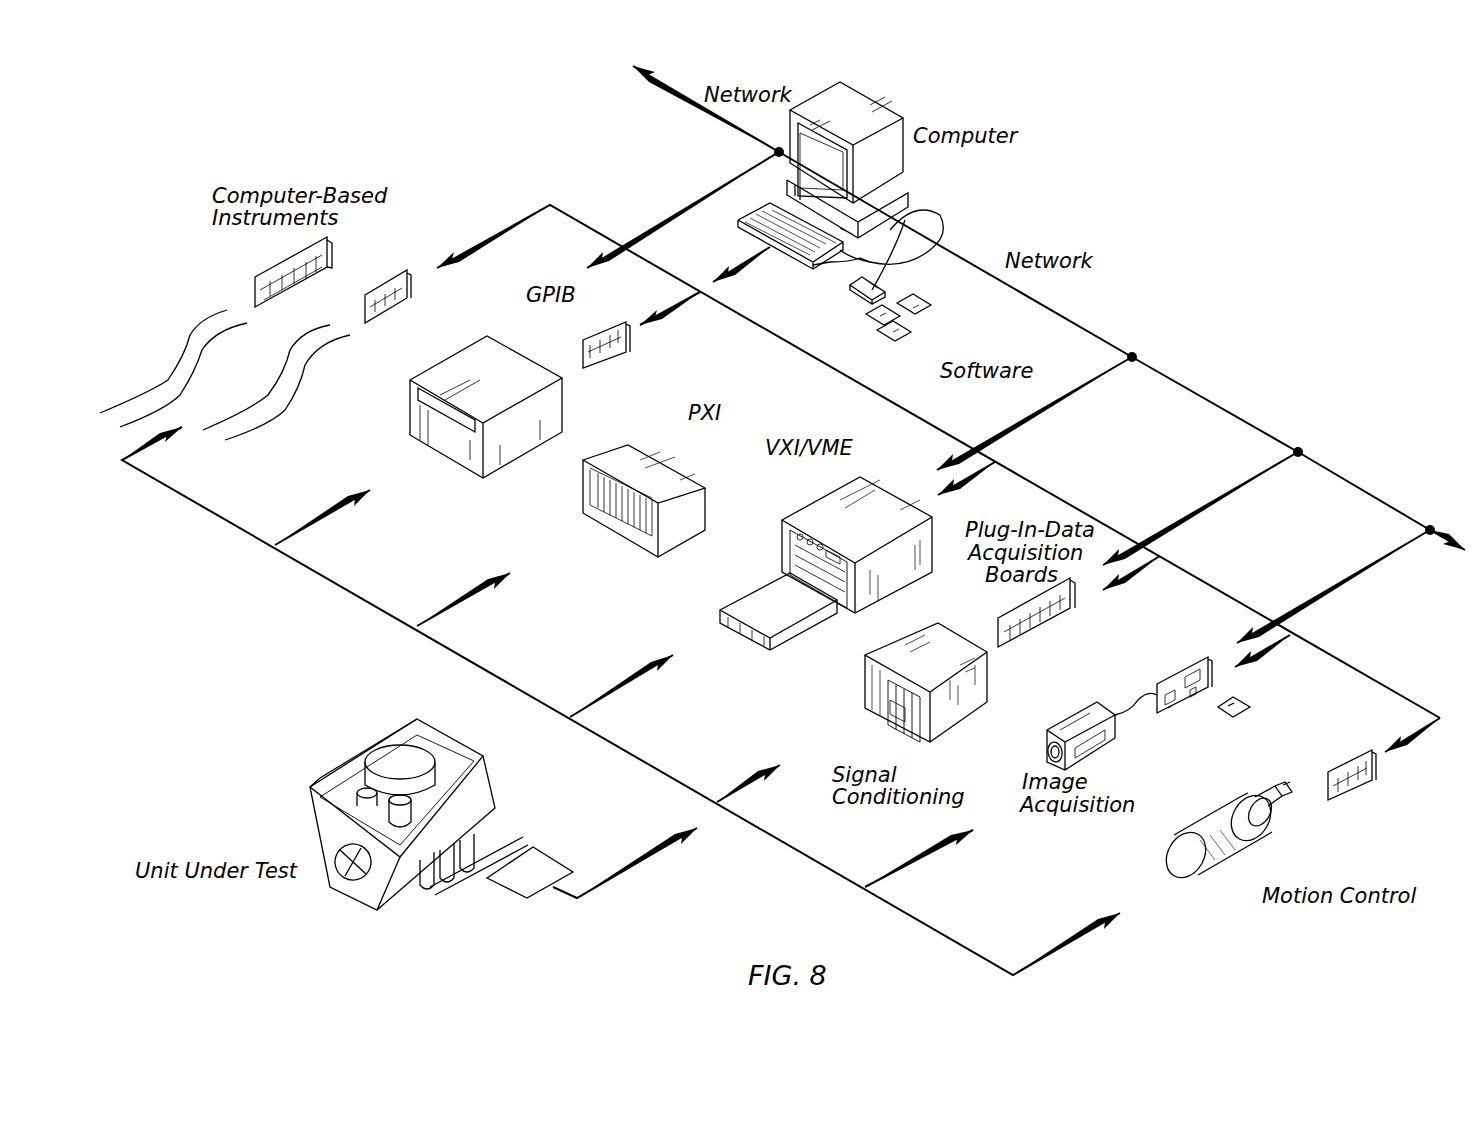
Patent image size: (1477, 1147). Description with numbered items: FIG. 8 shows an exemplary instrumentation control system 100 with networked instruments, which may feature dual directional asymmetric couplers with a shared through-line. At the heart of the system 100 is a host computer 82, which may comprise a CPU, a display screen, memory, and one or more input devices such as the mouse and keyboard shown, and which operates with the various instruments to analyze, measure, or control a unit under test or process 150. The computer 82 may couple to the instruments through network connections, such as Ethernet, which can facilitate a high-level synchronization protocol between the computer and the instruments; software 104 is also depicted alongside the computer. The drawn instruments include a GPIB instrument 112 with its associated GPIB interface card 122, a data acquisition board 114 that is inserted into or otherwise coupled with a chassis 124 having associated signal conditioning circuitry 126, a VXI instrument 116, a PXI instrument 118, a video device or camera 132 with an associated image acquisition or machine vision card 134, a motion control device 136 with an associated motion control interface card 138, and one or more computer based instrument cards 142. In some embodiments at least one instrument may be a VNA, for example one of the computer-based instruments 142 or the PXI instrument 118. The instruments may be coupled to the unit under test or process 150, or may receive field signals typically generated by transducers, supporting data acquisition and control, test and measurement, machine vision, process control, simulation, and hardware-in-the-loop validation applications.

The host computer 82 is at (870, 125).
The instrumentation control system 100 is at (1282, 198).
The software 104 is at (908, 325).
The GPIB instrument 112 is at (437, 363).
The data acquisition board 114 is at (1030, 635).
The VXI instrument 116 is at (830, 497).
The PXI instrument 118 is at (657, 460).
The GPIB interface card 122 is at (590, 340).
The chassis 124 is at (889, 693).
The signal conditioning circuitry 126 is at (895, 717).
The video device or camera 132 is at (1087, 748).
The image acquisition card 134 is at (1182, 667).
The motion control device 136 is at (1233, 853).
The motion control interface card 138 is at (1352, 790).
The computer based instrument cards 142 is at (270, 263).
The unit under test or process 150 is at (322, 845).